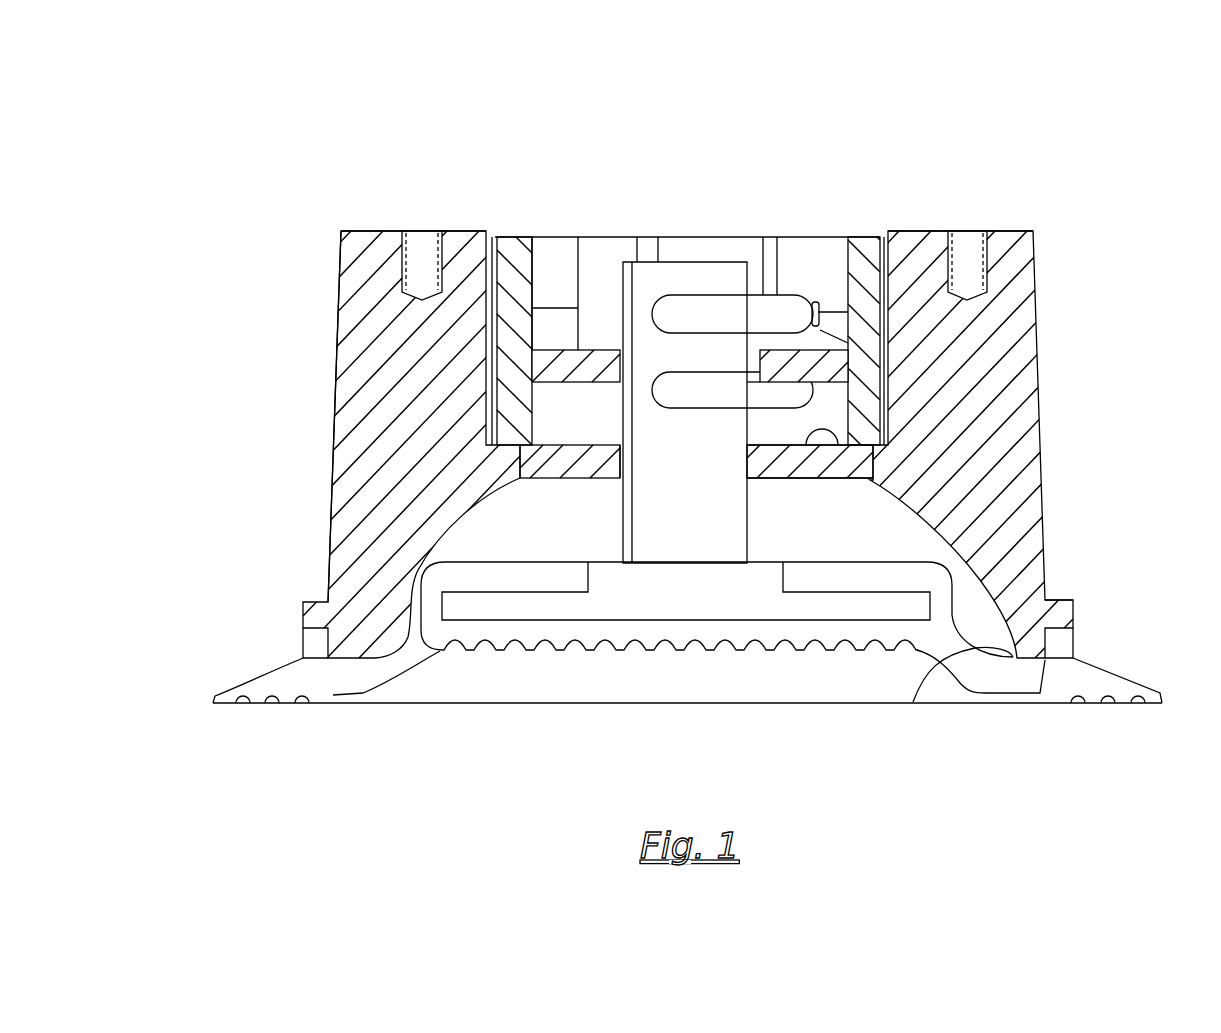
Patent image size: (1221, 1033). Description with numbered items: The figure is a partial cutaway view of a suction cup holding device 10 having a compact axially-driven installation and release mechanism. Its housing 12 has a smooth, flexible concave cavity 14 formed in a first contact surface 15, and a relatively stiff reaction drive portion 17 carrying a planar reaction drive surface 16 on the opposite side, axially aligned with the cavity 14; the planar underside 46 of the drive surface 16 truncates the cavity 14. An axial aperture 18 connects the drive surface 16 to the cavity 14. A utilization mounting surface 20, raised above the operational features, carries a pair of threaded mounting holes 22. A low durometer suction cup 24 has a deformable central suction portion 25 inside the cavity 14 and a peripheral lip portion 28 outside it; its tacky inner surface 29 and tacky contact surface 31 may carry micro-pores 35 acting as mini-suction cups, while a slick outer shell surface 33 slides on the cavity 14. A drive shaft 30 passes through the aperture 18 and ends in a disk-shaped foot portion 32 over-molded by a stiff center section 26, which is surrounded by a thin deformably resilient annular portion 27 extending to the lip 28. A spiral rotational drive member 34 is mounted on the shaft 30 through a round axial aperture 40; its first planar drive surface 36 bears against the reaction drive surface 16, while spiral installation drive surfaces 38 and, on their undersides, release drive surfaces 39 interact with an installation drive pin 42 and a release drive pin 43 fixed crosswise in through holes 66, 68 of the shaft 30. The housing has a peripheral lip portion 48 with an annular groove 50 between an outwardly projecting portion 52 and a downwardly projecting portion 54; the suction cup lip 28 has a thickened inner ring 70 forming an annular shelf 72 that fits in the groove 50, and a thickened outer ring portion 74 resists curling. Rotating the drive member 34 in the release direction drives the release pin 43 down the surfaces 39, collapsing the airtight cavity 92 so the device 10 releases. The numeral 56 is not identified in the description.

The suction cup holding device 10 is at (669, 150).
The housing 12 is at (1043, 372).
The concave cavity 14 is at (420, 565).
The first contact surface 15 is at (337, 658).
The reaction drive surface 16 is at (846, 448).
The reaction drive portion 17 is at (780, 472).
The axial aperture 18 is at (610, 492).
The utilization mounting surface 20 is at (360, 230).
The threaded mounting holes 22 is at (416, 208).
The suction cup 24 is at (1023, 687).
The central suction portion 25 is at (383, 714).
The center section 26 is at (617, 650).
The deformably resilient annular portion 27 is at (967, 688).
The peripheral lip portion 28 is at (1100, 668).
The inner surface 29 is at (858, 651).
The drive shaft 30 is at (685, 400).
The contact surface 31 is at (1115, 704).
The foot portion 32 is at (686, 591).
The outer shell surface 33 is at (378, 650).
The rotational drive member 34 is at (512, 237).
The micro-pores 35 is at (693, 651).
The first planar drive surface 36 is at (520, 478).
The installation drive surfaces 38 is at (598, 325).
The release drive surfaces 39 is at (585, 388).
The axial aperture 40 is at (752, 346).
The installation drive pin 42 is at (735, 314).
The release drive pin 43 is at (732, 390).
The underside 46 is at (815, 450).
The peripheral lip portion 48 is at (1063, 587).
The annular groove 50 is at (1052, 648).
The outwardly projecting portion 52 is at (1073, 610).
The downwardly projecting portion 54 is at (940, 672).
The outer wall 56 is at (333, 375).
The through hole 66 is at (652, 334).
The through hole 68 is at (667, 410).
The inner peripheral annular ring 70 is at (303, 645).
The annular shelf 72 is at (387, 652).
The thickened annular ring portion 74 is at (260, 680).
The airtight cavity 92 is at (752, 708).